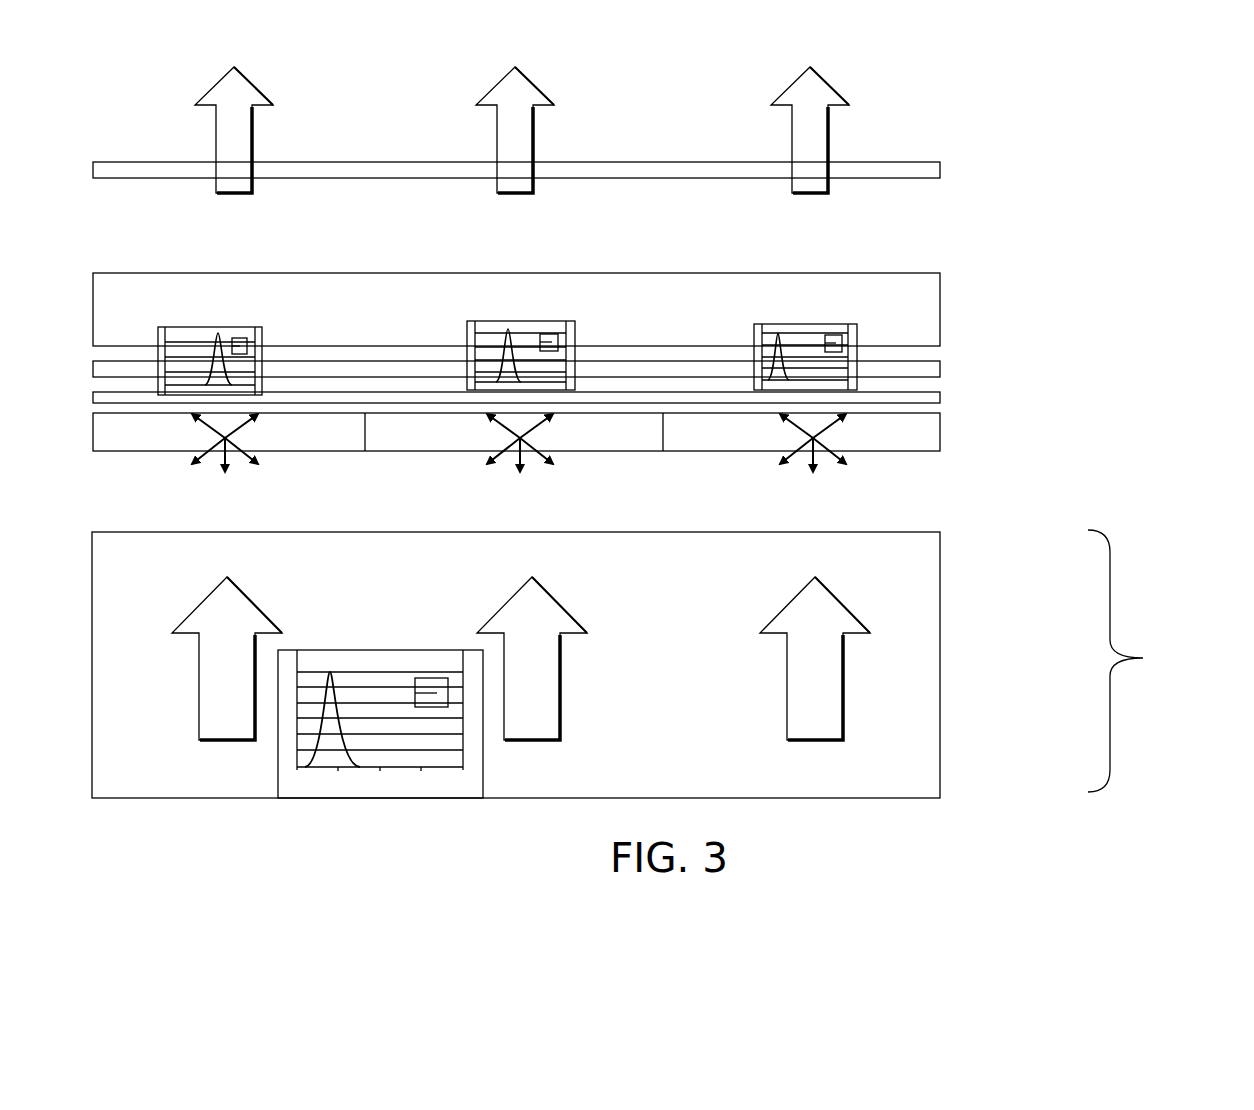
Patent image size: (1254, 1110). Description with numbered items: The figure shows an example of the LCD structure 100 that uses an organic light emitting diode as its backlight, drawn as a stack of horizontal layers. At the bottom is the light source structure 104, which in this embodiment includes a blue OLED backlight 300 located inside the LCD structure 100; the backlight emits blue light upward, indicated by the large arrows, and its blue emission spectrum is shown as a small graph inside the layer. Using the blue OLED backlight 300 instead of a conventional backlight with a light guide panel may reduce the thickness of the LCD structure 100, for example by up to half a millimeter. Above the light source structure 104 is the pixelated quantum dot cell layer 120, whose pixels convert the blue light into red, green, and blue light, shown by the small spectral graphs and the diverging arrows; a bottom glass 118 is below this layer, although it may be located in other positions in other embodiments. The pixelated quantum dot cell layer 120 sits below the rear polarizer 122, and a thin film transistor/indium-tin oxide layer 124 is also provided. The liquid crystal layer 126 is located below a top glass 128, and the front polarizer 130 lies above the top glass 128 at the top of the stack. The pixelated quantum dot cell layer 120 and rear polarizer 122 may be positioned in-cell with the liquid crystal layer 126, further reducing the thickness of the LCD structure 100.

The LCD structure 100 is at (1164, 108).
The front polarizer 130 is at (940, 170).
The top glass 128 is at (945, 232).
The liquid crystal layer 126 is at (940, 308).
The thin film transistor (TFT)/indium-tin oxide (ITO) layer 124 is at (940, 367).
The bottom glass 118 is at (940, 385).
The rear polarizer 122 is at (940, 395).
The pixelated quantum dot cell layer 120 is at (940, 447).
The blue OLED backlight 300 is at (588, 665).
The light source structure 104 is at (662, 664).